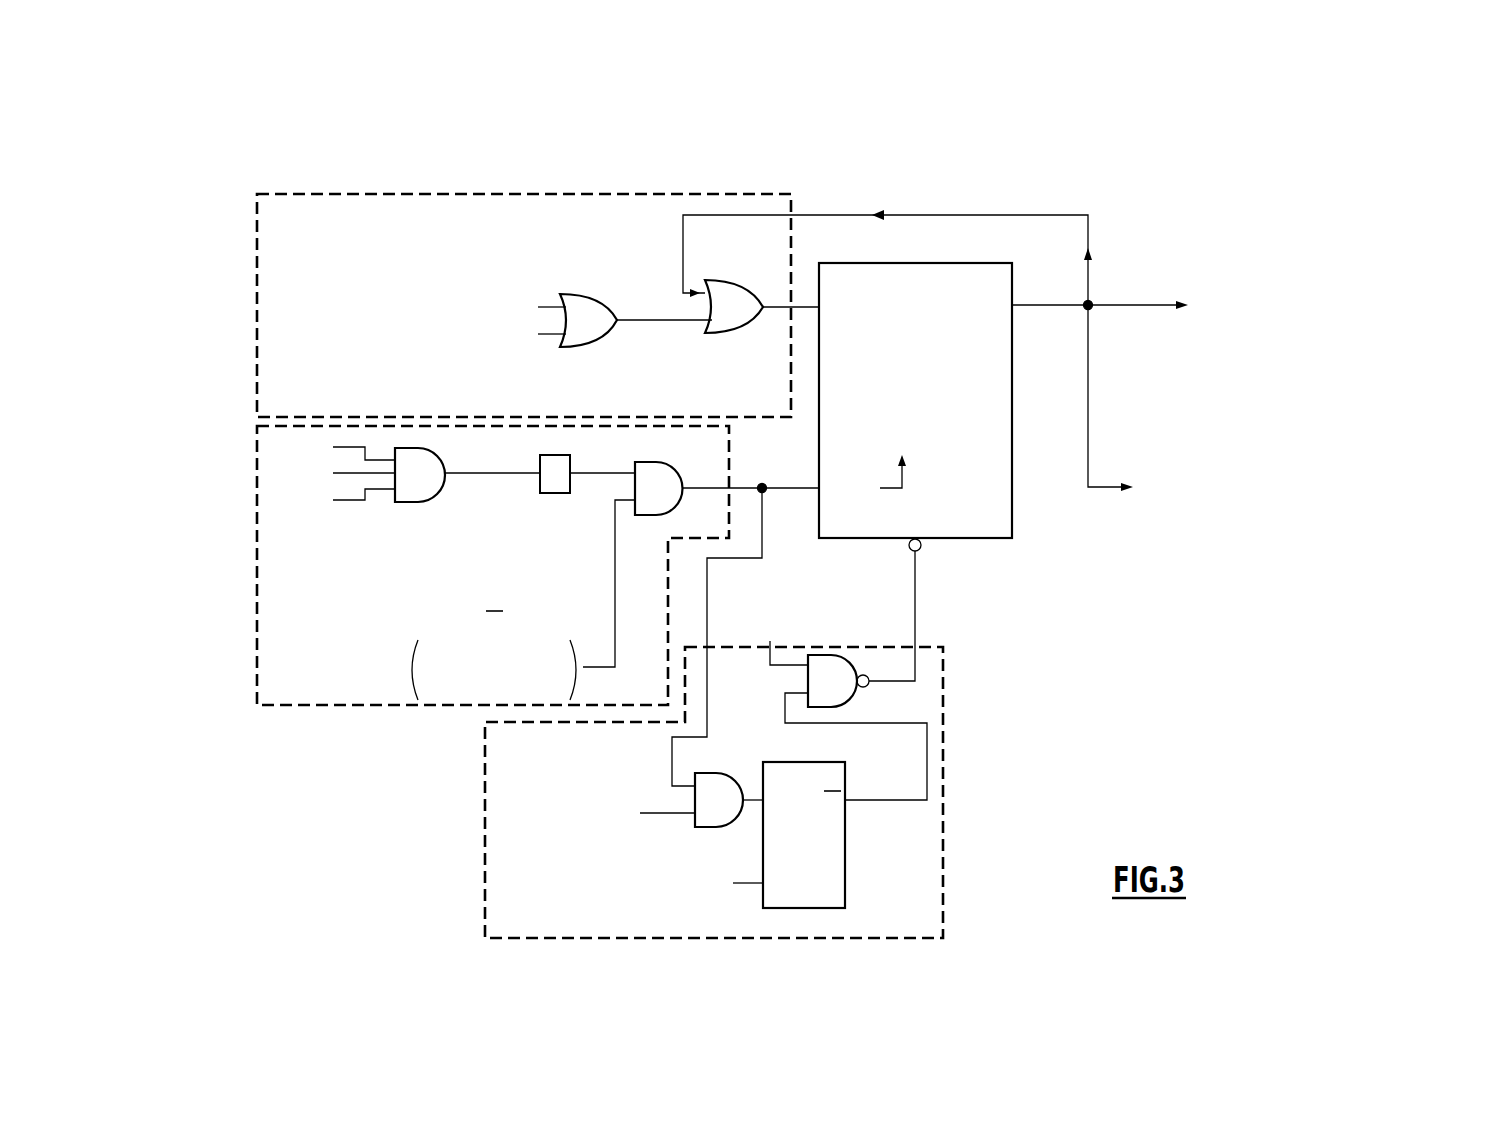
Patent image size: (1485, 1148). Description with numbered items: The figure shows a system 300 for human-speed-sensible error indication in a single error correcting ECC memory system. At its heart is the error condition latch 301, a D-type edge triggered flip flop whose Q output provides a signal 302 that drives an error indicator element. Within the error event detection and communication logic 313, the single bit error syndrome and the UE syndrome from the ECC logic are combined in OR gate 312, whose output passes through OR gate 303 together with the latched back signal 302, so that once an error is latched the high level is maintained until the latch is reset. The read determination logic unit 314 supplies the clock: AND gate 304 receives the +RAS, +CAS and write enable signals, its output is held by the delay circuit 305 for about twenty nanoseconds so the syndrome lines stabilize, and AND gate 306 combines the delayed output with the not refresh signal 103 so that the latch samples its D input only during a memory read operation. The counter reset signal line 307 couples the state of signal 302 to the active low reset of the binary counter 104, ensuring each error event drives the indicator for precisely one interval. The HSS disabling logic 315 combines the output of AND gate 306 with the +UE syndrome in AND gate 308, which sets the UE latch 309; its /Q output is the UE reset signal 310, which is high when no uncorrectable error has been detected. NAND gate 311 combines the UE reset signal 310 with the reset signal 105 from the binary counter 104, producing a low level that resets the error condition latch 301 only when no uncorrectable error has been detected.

The system 300 is at (266, 166).
The error condition latch 301 is at (936, 347).
The signal 302 is at (1112, 310).
The OR gate 303 is at (712, 280).
The AND gate 304 is at (442, 462).
The delay circuit 305 is at (557, 519).
The AND gate 306 is at (650, 462).
The counter reset signal line 307 is at (1268, 418).
The AND gate 308 is at (700, 773).
The UE latch 309 is at (798, 762).
The UE reset signal 310 is at (943, 735).
The NAND gate 311 is at (853, 698).
The OR gate 312 is at (586, 296).
The error event detection and communication logic 313 is at (257, 318).
The read determination logic unit 314 is at (257, 606).
The HSS disabling logic 315 is at (485, 890).
The reset signal 105 is at (787, 667).
The not refresh signal 103 is at (523, 600).
The binary counter 104 is at (1299, 518).